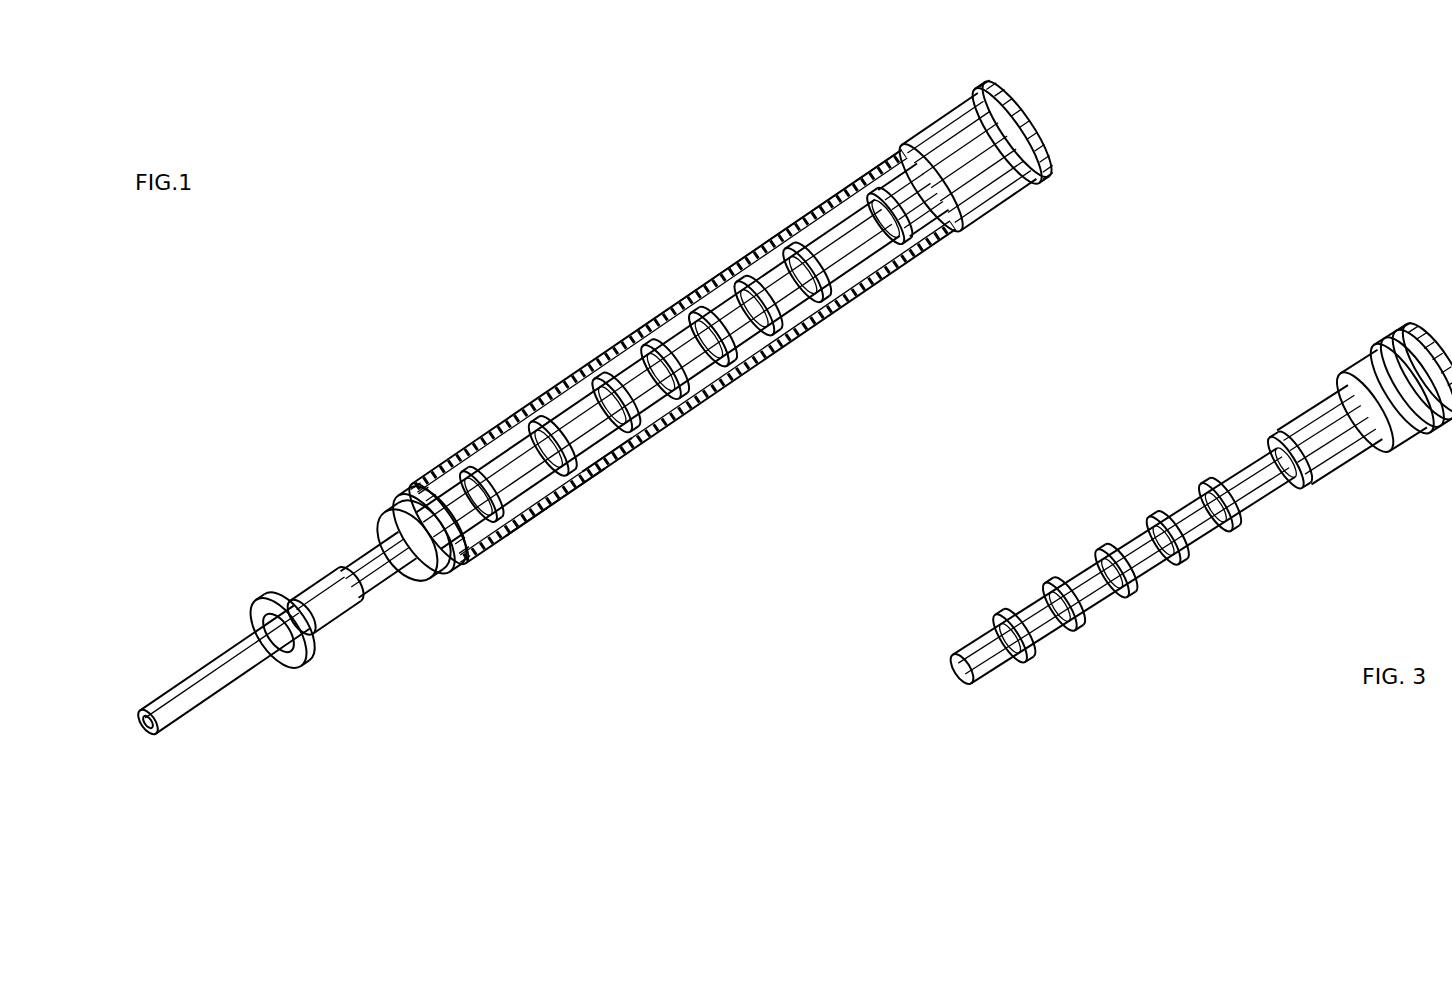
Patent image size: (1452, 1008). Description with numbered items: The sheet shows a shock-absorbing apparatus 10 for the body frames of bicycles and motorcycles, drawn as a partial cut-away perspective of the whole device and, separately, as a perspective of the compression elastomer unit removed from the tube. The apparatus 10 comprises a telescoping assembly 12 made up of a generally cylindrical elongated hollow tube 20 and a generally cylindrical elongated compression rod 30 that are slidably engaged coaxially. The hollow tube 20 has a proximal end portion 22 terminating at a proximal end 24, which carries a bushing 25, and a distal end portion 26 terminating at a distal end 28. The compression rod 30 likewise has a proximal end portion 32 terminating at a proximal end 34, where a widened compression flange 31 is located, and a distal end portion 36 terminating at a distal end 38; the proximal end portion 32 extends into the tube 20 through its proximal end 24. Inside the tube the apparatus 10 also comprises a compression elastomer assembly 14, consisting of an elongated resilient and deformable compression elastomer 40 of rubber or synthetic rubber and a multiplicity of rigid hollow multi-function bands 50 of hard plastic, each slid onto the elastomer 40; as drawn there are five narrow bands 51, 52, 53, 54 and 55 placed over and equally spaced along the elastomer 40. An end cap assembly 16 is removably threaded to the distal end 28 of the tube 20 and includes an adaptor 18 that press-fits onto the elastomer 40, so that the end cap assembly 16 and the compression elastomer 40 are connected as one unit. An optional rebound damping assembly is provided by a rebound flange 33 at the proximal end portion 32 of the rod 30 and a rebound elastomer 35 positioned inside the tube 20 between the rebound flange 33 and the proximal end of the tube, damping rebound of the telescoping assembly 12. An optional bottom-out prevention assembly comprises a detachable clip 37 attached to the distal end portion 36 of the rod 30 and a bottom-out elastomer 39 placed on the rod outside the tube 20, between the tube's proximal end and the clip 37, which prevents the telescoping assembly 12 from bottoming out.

In FIG. 1, the shock-absorbing apparatus 10 is at (388, 308).
In FIG. 1, the telescoping assembly 12 is at (892, 140).
In FIG. 1, the compression elastomer assembly 14 is at (706, 388).
In FIG. 1, the end cap assembly 16 is at (1054, 128).
In FIG. 3, the end cap assembly 16 is at (1346, 362).
In FIG. 1, the adaptor 18 is at (934, 232).
In FIG. 3, the adaptor 18 is at (1334, 460).
In FIG. 1, the hollow tube 20 is at (682, 312).
In FIG. 1, the proximal end portion 22 is at (472, 556).
In FIG. 1, the proximal end 24 is at (410, 478).
In FIG. 1, the bushing 25 is at (382, 524).
In FIG. 1, the distal end portion 26 is at (990, 180).
In FIG. 1, the distal end 28 is at (966, 96).
In FIG. 1, the compression rod 30 is at (370, 578).
In FIG. 1, the compression flange 31 is at (608, 462).
In FIG. 1, the proximal end portion 32 is at (510, 440).
In FIG. 1, the rebound flange 33 is at (530, 518).
In FIG. 1, the proximal end 34 is at (586, 482).
In FIG. 1, the rebound elastomer 35 is at (460, 478).
In FIG. 1, the distal end portion 36 is at (200, 702).
In FIG. 1, the detachable clip 37 is at (246, 606).
In FIG. 1, the distal end 38 is at (134, 714).
In FIG. 1, the bottom-out elastomer 39 is at (312, 578).
In FIG. 1, the compression elastomer 40 is at (814, 236).
In FIG. 3, the compression elastomer 40 is at (1178, 508).
In FIG. 1, the multi-function bands 50 is at (746, 256).
In FIG. 1, the multi-function band 51 is at (850, 284).
In FIG. 3, the multi-function band 51 is at (1236, 540).
In FIG. 1, the multi-function band 52 is at (800, 312).
In FIG. 3, the multi-function band 52 is at (1176, 564).
In FIG. 1, the multi-function band 53 is at (758, 356).
In FIG. 3, the multi-function band 53 is at (1128, 598).
In FIG. 1, the multi-function band 54 is at (618, 352).
In FIG. 3, the multi-function band 54 is at (1072, 632).
In FIG. 1, the multi-function band 55 is at (577, 388).
In FIG. 3, the multi-function band 55 is at (1020, 662).